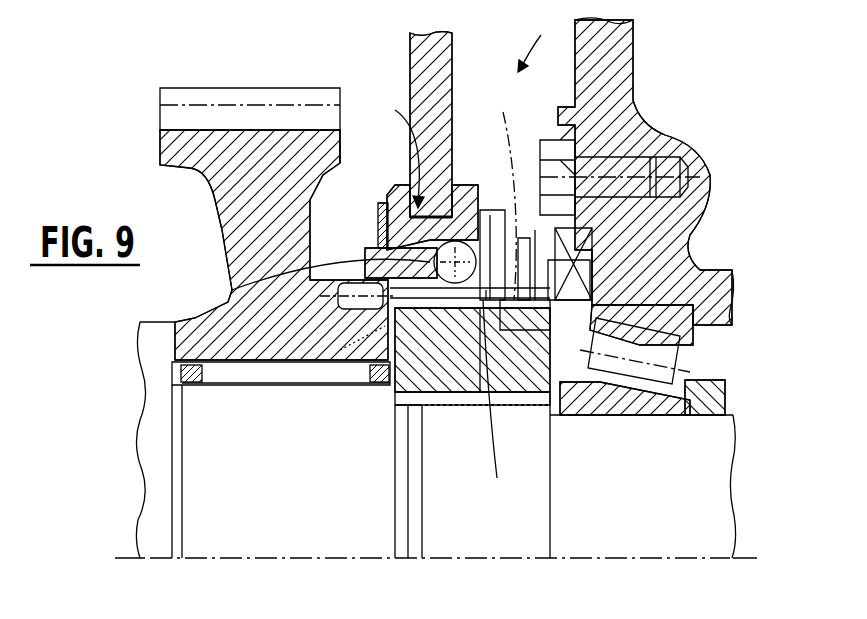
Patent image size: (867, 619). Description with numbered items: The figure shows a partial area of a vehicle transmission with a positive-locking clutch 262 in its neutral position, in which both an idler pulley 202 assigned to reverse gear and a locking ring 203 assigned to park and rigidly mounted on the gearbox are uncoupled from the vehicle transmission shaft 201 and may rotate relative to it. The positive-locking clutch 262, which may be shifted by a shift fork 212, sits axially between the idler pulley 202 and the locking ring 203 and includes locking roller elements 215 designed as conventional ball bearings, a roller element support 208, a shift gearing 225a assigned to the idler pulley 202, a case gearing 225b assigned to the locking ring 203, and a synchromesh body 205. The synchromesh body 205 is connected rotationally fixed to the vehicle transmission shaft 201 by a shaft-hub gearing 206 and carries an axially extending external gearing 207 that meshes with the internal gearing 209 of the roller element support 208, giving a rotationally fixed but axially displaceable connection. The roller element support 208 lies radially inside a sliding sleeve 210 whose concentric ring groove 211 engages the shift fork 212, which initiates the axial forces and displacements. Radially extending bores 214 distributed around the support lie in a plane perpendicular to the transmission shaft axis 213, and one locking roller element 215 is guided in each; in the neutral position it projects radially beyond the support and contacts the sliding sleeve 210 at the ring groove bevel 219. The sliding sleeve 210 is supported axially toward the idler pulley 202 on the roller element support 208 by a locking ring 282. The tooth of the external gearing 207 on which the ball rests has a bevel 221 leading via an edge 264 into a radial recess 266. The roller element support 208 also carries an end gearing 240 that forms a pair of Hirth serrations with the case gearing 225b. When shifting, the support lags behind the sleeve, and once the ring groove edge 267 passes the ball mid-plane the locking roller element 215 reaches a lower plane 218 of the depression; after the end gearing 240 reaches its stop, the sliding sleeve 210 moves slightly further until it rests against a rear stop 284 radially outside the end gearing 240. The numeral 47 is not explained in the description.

The shoulder 47 is at (385, 195).
The vehicle transmission shaft 201 is at (550, 523).
The idler pulley 202 is at (248, 199).
The locking ring 203 is at (598, 130).
The synchromesh body 205 is at (450, 383).
The shaft-hub gearing 206 is at (478, 400).
The external gearing 207 is at (362, 336).
The roller element support 208 is at (347, 312).
The internal gearing 209 is at (590, 252).
The sliding sleeve 210 is at (405, 186).
The ring groove 211 is at (394, 150).
The shift fork 212 is at (433, 76).
The transmission shaft axis 213 is at (120, 558).
The bores 214 is at (372, 265).
The locking roller elements 215 is at (478, 295).
The lower plane 218 is at (505, 330).
The ring groove bevel 219 is at (476, 225).
The bevel 221 is at (488, 295).
The shift gearing 225a is at (545, 250).
The case gearing 225b is at (475, 300).
The end gearing 240 is at (516, 193).
The positive-locking clutch 262 is at (536, 39).
The edge 264 is at (415, 342).
The radial recess 266 is at (501, 402).
The ring groove edge 267 is at (378, 229).
The locking ring 282 is at (378, 205).
The rear stop 284 is at (500, 205).